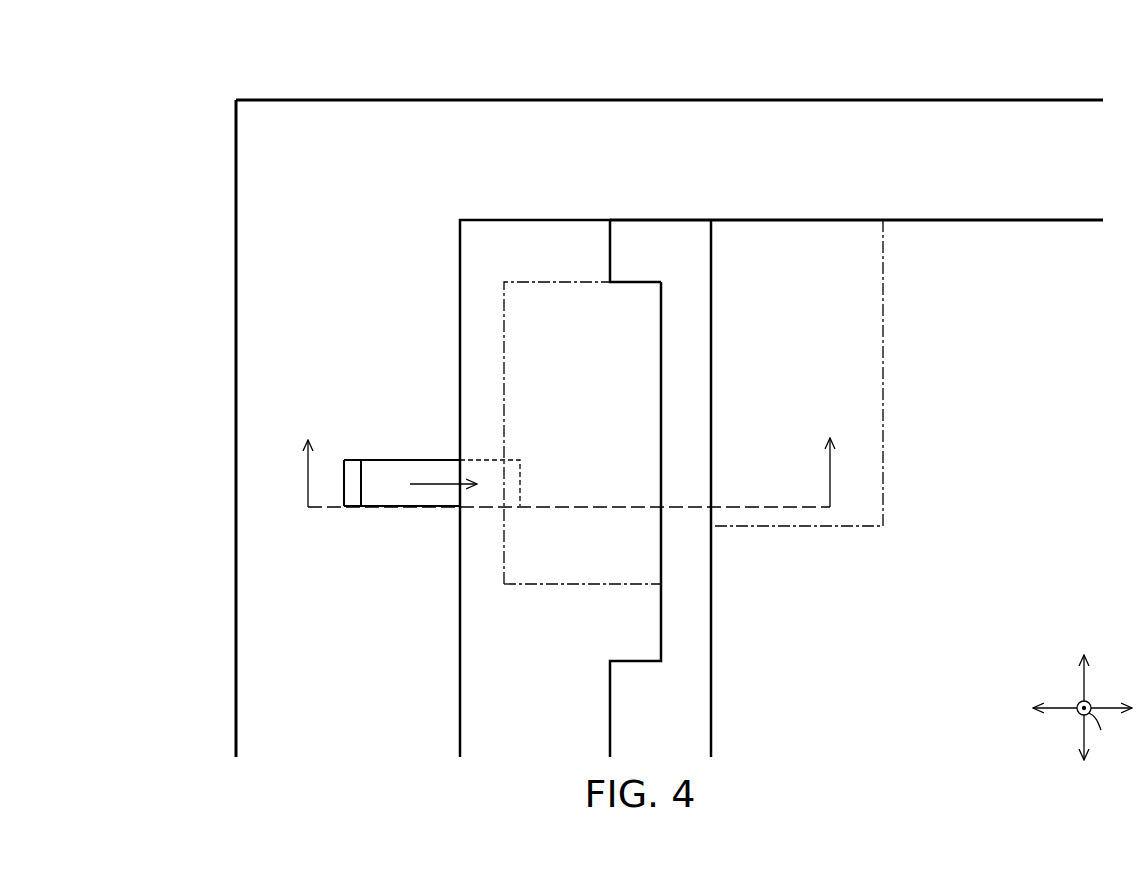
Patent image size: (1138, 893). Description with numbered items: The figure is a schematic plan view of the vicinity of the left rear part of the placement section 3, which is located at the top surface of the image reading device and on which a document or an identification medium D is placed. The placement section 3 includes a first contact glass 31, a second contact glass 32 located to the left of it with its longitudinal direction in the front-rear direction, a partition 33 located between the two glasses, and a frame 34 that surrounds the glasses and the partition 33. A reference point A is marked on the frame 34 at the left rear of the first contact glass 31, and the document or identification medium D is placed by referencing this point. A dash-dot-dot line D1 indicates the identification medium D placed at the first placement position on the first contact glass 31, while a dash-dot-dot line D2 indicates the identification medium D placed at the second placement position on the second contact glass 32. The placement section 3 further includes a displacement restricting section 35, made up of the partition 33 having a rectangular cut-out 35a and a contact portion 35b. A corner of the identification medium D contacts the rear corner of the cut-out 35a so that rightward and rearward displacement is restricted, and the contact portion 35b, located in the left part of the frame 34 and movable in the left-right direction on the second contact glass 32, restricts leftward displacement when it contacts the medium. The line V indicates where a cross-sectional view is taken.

The placement section 3 is at (932, 78).
The first contact glass 31 is at (1008, 243).
The second contact glass 32 is at (533, 243).
The partition 33 is at (670, 242).
The frame 34 is at (270, 159).
The displacement restricting section 35 is at (554, 453).
The cut-out 35a is at (680, 480).
The contact portion 35b is at (344, 470).
The reference point A is at (711, 220).
The identification medium D is at (689, 402).
The identification medium at first placement position D1 is at (883, 330).
The identification medium at second placement position D2 is at (504, 323).
The line V- V is at (564, 472).